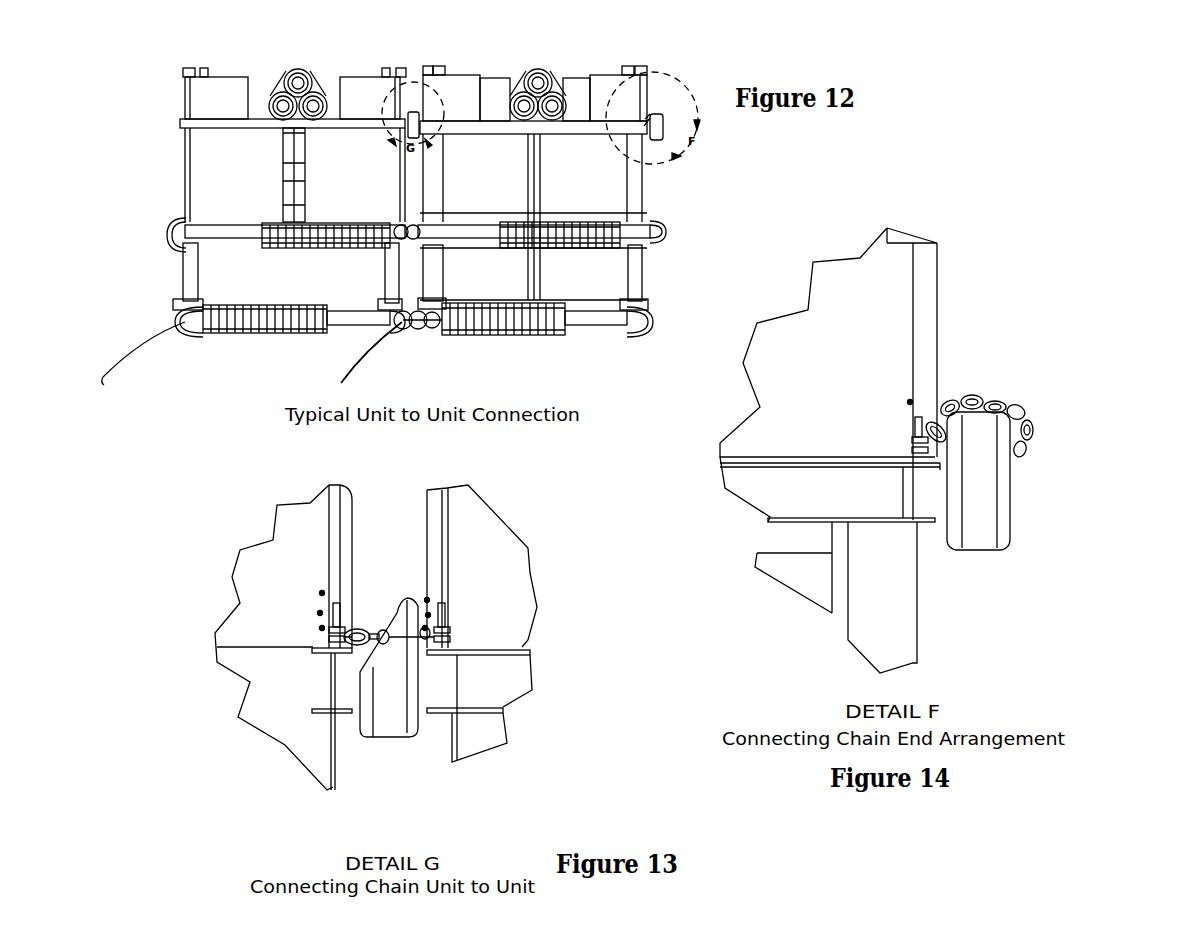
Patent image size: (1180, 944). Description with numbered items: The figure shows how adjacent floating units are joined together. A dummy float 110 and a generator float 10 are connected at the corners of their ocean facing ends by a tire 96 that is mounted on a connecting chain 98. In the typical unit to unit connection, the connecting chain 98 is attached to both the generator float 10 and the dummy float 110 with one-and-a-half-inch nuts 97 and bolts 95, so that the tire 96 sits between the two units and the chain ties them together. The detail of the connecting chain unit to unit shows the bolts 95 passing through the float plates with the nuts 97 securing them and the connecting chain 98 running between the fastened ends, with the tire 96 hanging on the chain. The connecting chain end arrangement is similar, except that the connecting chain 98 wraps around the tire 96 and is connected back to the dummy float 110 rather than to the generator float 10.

In FIG. 12, the generator float 10 is at (420, 60).
In FIG. 12, the dummy float 110 is at (180, 55).
In FIG. 13, the bolts 95 is at (322, 593).
In FIG. 14, the bolts 95 is at (910, 402).
In FIG. 13, the tire 96 is at (402, 740).
In FIG. 14, the tire 96 is at (978, 552).
In FIG. 13, the nuts 97 is at (322, 628).
In FIG. 14, the nuts 97 is at (918, 447).
In FIG. 13, the connecting chain 98 is at (353, 633).
In FIG. 14, the connecting chain 98 is at (1020, 453).